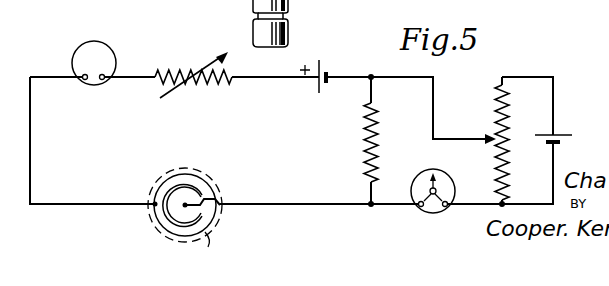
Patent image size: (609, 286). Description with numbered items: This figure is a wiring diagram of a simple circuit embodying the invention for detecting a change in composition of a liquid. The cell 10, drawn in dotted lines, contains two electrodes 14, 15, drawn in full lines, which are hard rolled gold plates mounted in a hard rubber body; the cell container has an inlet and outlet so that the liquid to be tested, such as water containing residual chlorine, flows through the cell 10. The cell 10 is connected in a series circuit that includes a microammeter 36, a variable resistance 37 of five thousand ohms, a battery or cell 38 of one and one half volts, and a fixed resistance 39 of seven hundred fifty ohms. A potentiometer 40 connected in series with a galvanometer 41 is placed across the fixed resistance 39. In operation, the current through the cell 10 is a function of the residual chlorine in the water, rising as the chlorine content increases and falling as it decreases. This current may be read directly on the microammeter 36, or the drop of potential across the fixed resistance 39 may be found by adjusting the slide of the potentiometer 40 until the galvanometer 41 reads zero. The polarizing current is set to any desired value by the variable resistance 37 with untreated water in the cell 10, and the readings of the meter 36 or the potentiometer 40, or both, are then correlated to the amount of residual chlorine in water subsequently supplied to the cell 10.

The cell 10 is at (143, 224).
The electrode 14 is at (203, 222).
The electrode 15 is at (208, 237).
The microammeter 36 is at (87, 42).
The variable resistance 37 is at (183, 60).
The battery or cell 38 is at (323, 63).
The fixed resistance 39 is at (363, 142).
The potentiometer 40 is at (520, 142).
The galvanometer 41 is at (430, 213).